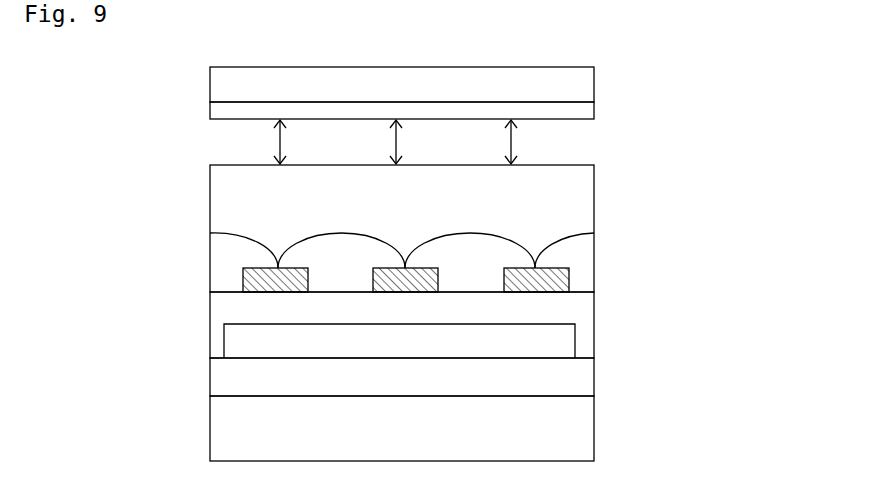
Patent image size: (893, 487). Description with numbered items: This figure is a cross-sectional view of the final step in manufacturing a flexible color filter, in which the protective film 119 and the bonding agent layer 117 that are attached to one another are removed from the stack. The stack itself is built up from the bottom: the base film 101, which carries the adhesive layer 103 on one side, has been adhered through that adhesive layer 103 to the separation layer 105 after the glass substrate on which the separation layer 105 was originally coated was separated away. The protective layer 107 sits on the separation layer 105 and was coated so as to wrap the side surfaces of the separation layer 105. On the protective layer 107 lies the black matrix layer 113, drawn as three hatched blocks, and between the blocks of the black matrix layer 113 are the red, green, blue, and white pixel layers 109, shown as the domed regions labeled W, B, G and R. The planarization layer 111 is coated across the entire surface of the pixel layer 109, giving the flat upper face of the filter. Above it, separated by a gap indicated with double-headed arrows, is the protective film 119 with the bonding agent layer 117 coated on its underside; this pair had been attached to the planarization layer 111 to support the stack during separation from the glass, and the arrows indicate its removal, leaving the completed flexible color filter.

The base film 101 is at (553, 433).
The adhesive layer 103 is at (553, 383).
The separation layer 105 is at (553, 347).
The protective layer 107 is at (552, 312).
The pixel layer 109 is at (588, 237).
The planarization layer 111 is at (578, 196).
The black matrix layer 113 is at (558, 285).
The bonding agent layer 117 is at (580, 113).
The protective film 119 is at (581, 88).